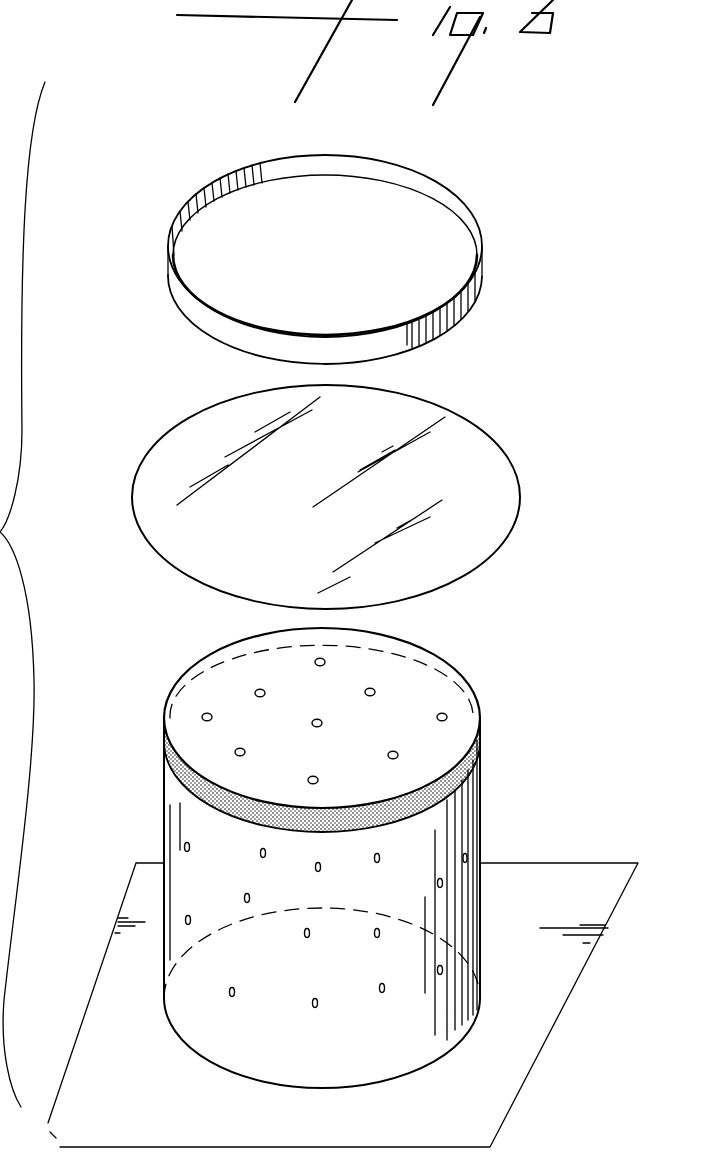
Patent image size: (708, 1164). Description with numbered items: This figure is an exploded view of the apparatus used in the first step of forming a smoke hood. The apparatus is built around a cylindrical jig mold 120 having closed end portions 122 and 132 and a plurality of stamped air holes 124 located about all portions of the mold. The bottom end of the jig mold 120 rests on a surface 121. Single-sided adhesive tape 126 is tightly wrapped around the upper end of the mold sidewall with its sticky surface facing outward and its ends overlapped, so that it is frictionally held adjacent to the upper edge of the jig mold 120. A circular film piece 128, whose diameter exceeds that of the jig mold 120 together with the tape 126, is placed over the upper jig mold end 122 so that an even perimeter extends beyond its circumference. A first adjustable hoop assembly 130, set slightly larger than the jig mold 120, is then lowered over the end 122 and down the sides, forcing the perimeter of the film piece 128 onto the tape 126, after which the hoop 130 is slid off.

The cylindrical jig mold 120 is at (470, 893).
The surface 121 is at (150, 894).
The closed end portion 122 is at (407, 688).
The stamped air holes 124 is at (382, 991).
The single-sided adhesive tape 126 is at (463, 777).
The circular film piece 128 is at (482, 480).
The first adjustable hoop assembly 130 is at (478, 293).
The closed end portion 132 is at (452, 1040).